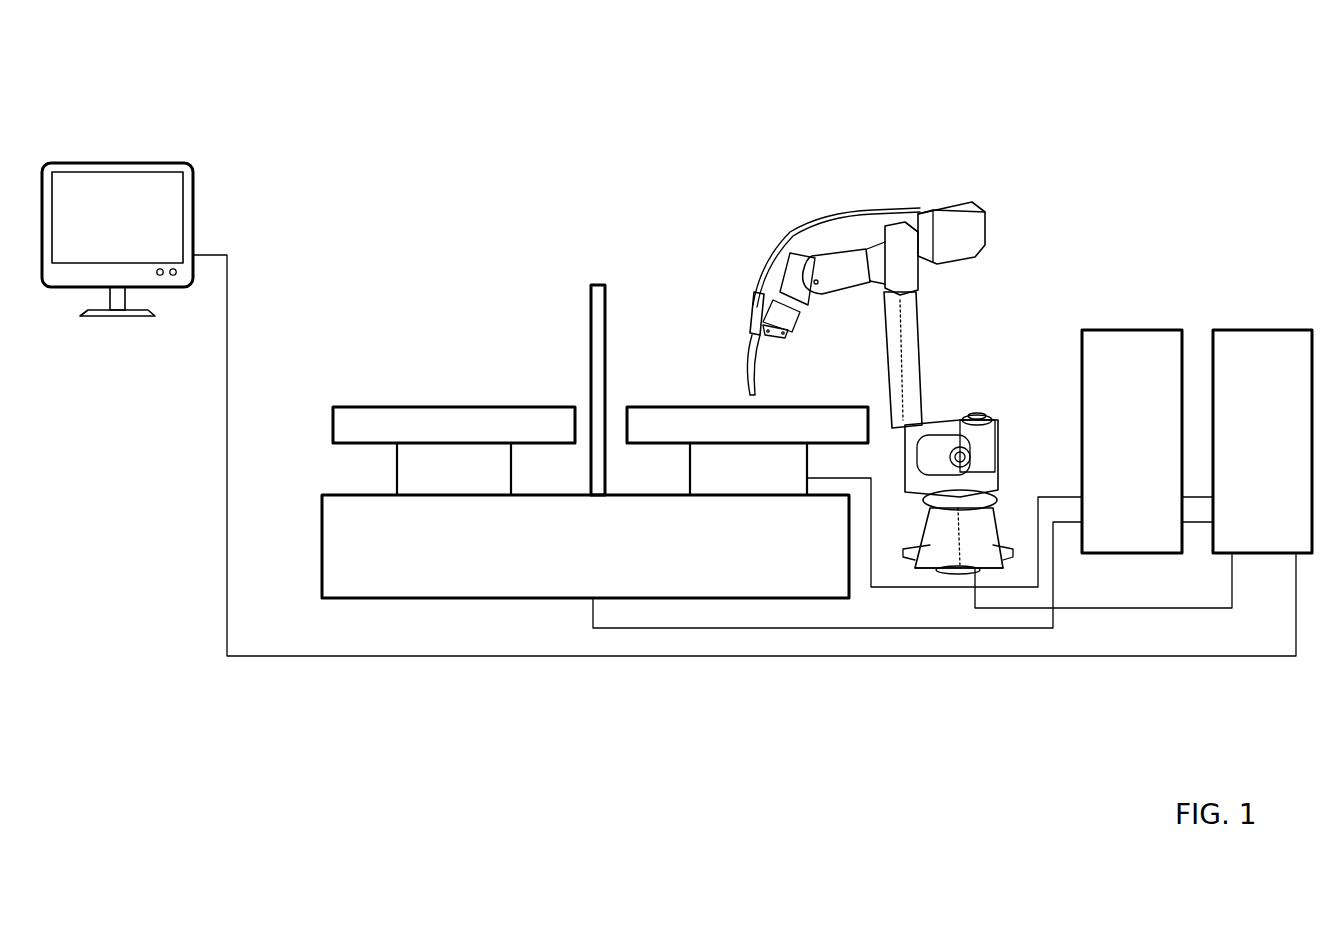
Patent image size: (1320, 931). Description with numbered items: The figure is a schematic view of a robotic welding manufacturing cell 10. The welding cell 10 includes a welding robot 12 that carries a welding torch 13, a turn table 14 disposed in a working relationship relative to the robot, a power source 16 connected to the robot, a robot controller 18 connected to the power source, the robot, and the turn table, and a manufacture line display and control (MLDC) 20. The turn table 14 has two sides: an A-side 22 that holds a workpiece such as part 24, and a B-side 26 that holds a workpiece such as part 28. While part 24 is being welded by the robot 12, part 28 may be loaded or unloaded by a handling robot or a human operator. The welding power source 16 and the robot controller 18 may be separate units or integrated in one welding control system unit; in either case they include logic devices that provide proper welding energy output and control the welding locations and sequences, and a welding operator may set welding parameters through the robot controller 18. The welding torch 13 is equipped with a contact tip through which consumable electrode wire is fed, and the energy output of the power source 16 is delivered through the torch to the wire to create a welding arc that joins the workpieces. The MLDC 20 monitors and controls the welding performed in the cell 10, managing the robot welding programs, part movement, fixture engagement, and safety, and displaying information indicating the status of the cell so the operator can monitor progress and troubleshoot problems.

The robotic welding manufacturing cell 10 is at (818, 137).
The welding robot 12 is at (953, 208).
The welding torch 13 is at (743, 358).
The turn table 14 is at (332, 540).
The power source 16 is at (1127, 337).
The robot controller 18 is at (1238, 337).
The manufacture line display and control 20 is at (193, 196).
The A-side 22 is at (698, 470).
The part 24 is at (647, 415).
The B-side 26 is at (403, 472).
The part 28 is at (455, 413).